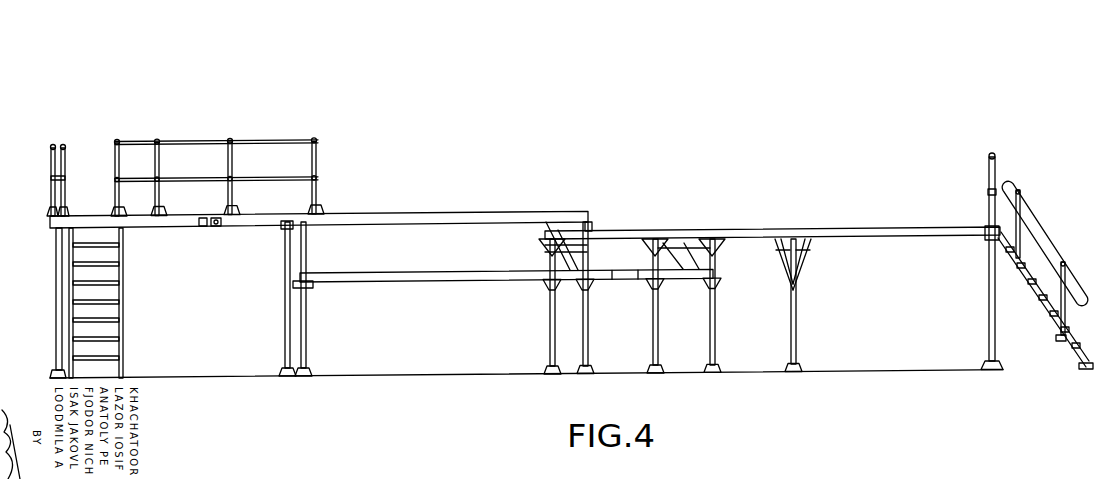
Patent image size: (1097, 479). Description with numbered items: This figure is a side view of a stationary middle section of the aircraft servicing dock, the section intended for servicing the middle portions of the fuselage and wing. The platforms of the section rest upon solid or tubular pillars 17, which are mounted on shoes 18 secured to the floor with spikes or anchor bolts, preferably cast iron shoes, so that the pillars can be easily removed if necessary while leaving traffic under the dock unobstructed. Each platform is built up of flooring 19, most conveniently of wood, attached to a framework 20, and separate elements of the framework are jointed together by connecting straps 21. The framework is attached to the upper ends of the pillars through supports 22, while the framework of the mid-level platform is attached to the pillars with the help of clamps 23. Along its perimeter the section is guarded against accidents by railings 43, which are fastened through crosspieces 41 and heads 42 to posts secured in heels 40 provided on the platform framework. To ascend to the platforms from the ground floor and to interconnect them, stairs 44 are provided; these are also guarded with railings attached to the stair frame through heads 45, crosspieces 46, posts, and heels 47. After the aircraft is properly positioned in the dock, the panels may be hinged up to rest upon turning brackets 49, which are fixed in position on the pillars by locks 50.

The pillars 17 is at (287, 315).
The shoes 18 is at (313, 367).
The flooring 19 is at (217, 219).
The framework 20 is at (107, 222).
The connecting straps 21 is at (204, 220).
The supports 22 is at (283, 230).
The clamps 23 is at (308, 272).
The heels 40 is at (58, 213).
The crosspieces 41 is at (58, 178).
The heads 42 is at (52, 147).
The railings 43 is at (63, 145).
The stairs 44 is at (1070, 367).
The heads 45 is at (1068, 262).
The crosspieces 46 is at (1063, 302).
The heels 47 is at (1067, 337).
The turning brackets 49 is at (777, 273).
The locks 50 is at (805, 283).